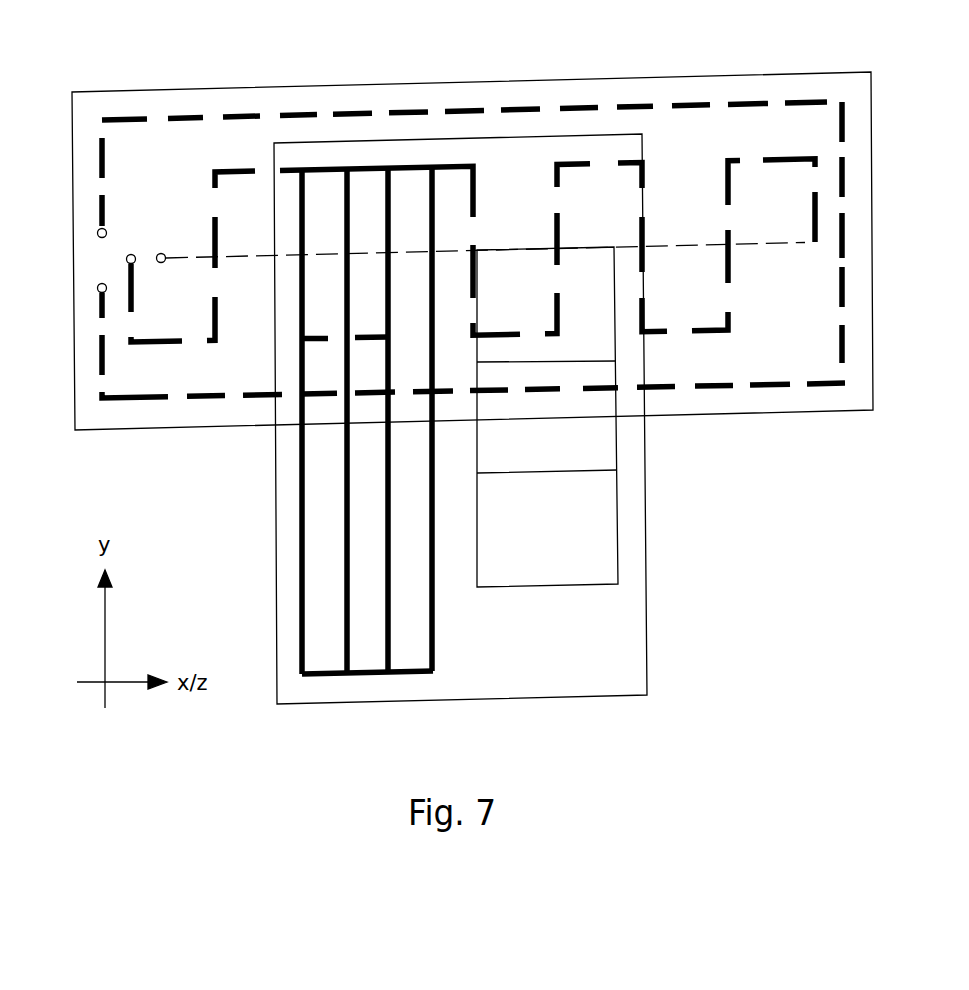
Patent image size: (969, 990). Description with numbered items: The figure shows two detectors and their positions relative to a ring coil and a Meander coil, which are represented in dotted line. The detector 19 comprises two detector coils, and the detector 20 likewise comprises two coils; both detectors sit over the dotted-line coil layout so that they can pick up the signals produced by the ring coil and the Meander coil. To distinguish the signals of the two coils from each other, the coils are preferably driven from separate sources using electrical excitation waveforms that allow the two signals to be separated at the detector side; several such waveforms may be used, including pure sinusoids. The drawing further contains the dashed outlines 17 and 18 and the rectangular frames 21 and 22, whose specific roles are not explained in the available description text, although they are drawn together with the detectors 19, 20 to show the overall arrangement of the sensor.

The conductor loop segment 17 is at (216, 220).
The outer conductor loop 18 is at (330, 113).
The detector 19 is at (365, 675).
The detector 20 is at (535, 587).
The carrier substrate 21 is at (535, 700).
The housing 22 is at (245, 88).